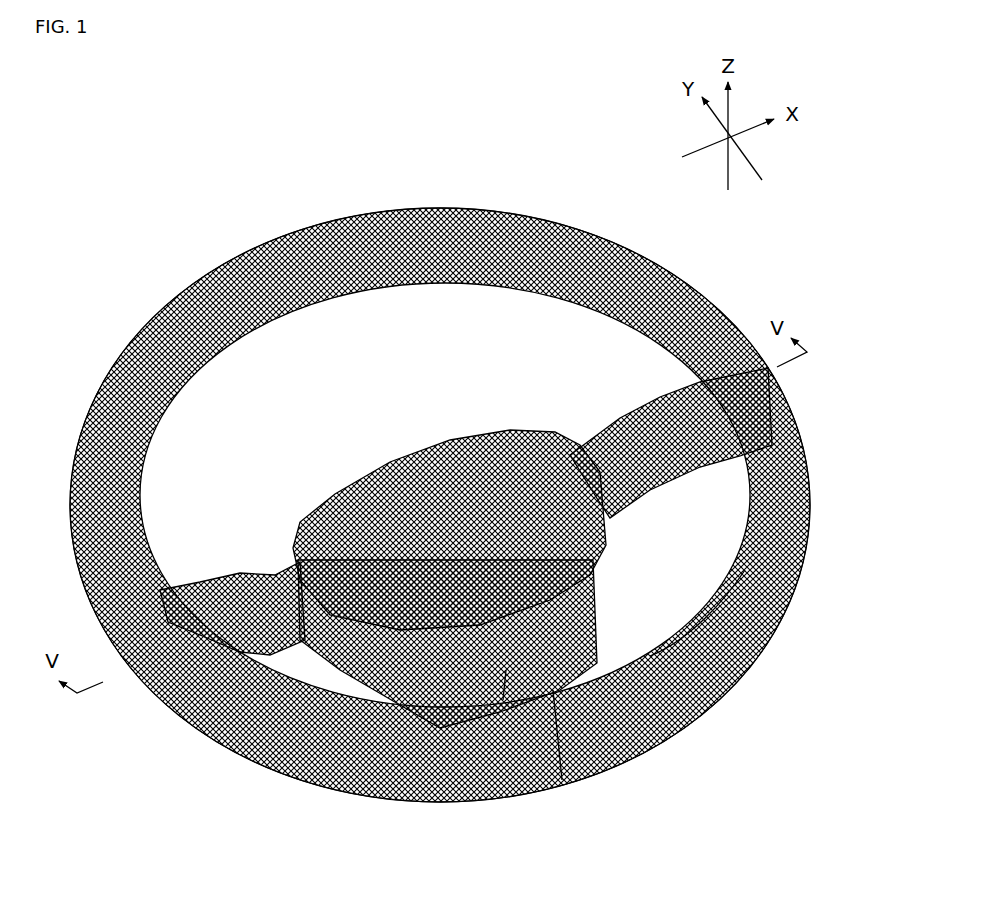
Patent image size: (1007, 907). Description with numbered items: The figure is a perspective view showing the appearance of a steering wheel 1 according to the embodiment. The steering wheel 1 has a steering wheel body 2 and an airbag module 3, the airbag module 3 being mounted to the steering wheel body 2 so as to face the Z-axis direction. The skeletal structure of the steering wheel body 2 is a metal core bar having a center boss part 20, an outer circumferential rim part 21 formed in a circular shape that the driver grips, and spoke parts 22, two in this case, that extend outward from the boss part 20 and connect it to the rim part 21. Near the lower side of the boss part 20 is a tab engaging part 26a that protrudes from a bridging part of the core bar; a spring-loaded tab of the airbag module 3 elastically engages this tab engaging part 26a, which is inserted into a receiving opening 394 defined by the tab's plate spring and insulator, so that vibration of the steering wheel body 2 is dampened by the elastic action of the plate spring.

The steering wheel 1 is at (419, 171).
The steering wheel body 2 is at (469, 212).
The airbag module 3 is at (405, 451).
The boss part 20 is at (594, 634).
The rim part 21 is at (688, 728).
The spoke parts 22 is at (593, 428).
The tab engaging part 26a is at (505, 690).
The receiving opening 394 is at (566, 786).